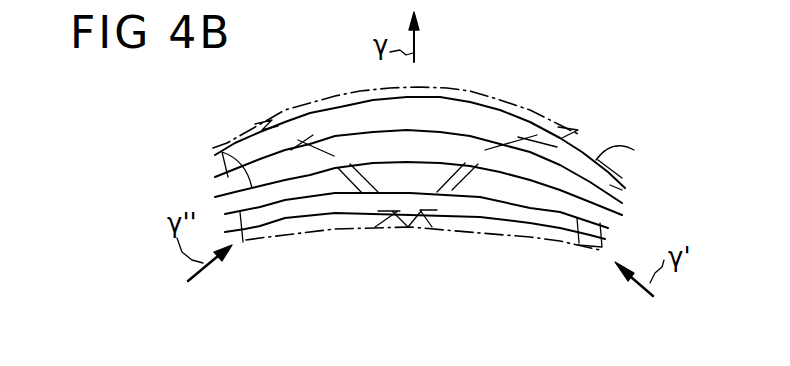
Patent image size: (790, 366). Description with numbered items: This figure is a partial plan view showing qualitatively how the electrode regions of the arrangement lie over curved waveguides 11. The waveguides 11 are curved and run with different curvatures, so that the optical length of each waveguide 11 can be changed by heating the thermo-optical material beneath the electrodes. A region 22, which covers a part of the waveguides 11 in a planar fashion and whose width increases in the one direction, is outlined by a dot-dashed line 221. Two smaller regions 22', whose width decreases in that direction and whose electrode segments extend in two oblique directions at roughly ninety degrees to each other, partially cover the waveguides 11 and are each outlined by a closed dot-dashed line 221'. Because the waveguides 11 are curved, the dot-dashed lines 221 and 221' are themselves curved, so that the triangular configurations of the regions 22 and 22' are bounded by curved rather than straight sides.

The waveguide 11 is at (504, 110).
The region 22 is at (420, 118).
The region 22' is at (416, 240).
The dot-dashed line 221 is at (396, 92).
The dot-dashed line 221' is at (396, 276).